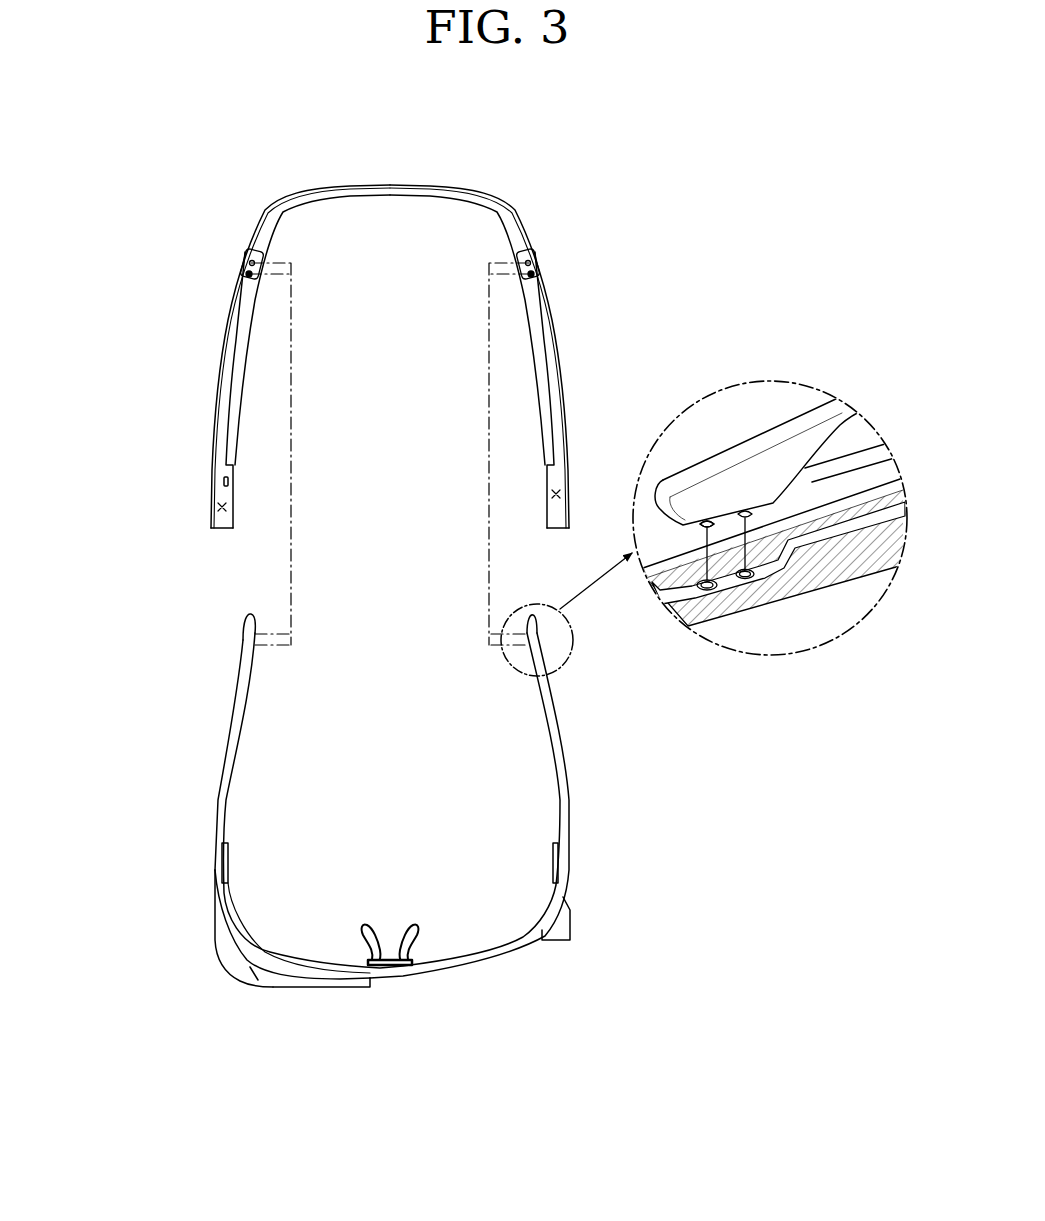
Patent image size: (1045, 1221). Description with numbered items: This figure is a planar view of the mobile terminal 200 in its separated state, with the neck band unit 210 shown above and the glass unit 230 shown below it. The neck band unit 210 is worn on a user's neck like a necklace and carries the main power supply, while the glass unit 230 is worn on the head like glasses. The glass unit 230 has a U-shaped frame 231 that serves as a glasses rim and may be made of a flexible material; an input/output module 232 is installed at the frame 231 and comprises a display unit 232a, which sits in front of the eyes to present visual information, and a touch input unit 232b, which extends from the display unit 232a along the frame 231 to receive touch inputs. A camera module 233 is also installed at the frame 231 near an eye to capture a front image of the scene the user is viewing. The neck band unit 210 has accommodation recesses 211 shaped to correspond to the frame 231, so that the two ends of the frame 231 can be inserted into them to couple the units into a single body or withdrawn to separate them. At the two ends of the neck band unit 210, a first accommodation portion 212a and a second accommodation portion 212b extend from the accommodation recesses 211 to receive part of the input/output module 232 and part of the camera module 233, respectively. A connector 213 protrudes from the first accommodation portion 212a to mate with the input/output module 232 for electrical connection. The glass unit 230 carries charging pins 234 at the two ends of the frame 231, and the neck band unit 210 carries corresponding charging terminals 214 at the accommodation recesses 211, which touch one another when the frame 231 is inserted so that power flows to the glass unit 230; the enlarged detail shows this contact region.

The mobile terminal 200 is at (112, 571).
The neck band unit 210 is at (180, 534).
The accommodation recesses 211 is at (234, 331).
The first accommodation portion 212a is at (222, 507).
The second accommodation portion 212b is at (556, 494).
The connector 213 is at (225, 482).
The charging terminals 214 is at (538, 266).
The glass unit 230 is at (193, 716).
The frame 231 is at (403, 973).
The input/output module 232 is at (317, 1045).
The display unit 232a is at (294, 983).
The touch input unit 232b is at (237, 967).
The camera module 233 is at (553, 941).
The charging pins 234 is at (707, 522).